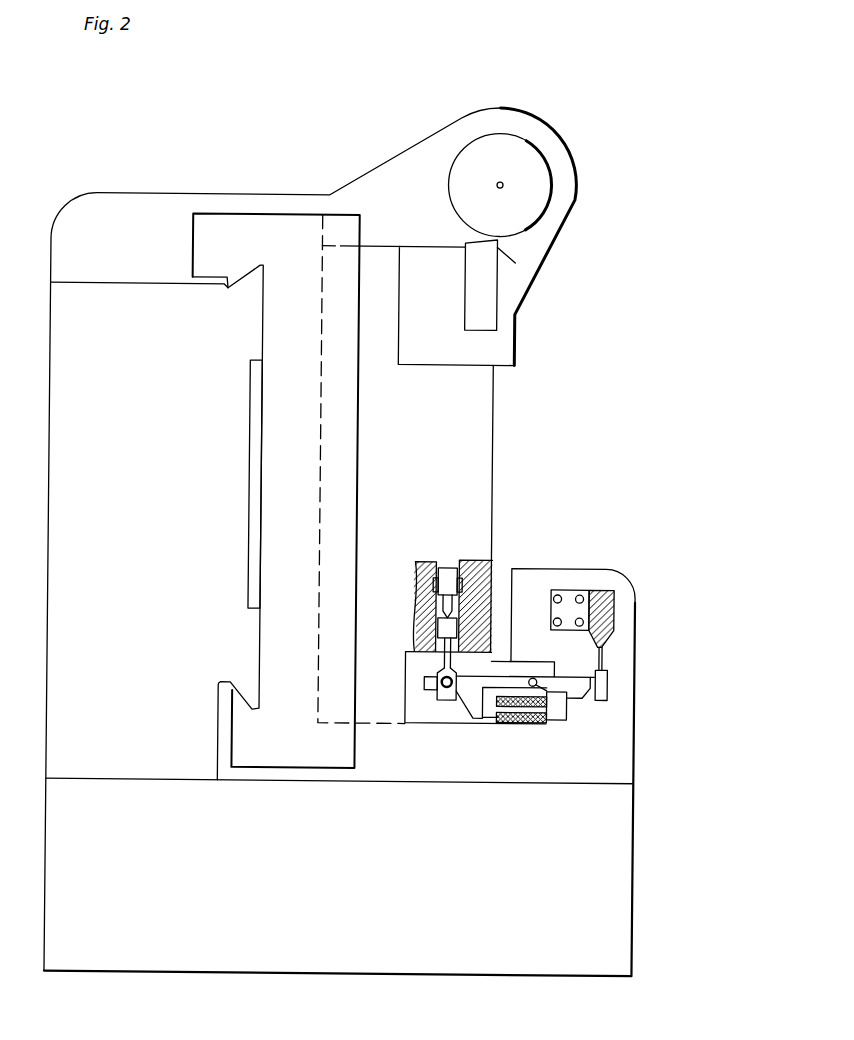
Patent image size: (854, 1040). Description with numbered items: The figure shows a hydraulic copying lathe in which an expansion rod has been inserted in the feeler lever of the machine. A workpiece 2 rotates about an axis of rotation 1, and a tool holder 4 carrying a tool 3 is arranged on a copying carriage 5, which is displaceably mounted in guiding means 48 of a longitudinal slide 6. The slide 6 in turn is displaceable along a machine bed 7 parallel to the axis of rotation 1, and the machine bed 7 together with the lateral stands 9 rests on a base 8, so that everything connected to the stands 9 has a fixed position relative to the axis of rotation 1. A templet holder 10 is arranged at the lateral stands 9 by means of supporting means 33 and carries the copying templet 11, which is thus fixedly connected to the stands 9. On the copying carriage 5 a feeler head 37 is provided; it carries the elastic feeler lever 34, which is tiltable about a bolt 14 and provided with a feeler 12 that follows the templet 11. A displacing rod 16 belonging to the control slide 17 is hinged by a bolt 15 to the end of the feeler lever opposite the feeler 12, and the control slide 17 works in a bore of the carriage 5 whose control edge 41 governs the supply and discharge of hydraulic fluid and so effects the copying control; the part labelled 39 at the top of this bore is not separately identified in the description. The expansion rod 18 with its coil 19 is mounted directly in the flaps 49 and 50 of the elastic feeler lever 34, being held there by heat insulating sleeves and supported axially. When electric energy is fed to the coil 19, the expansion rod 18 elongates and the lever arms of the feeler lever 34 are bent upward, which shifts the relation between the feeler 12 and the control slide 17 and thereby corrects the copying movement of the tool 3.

The axis of rotation 1 is at (500, 181).
The workpiece 2 is at (529, 191).
The tool 3 is at (481, 297).
The tool holder 4 is at (429, 330).
The copying carriage 5 is at (427, 438).
The longitudinal slide 6 is at (298, 442).
The machine bed 7 is at (148, 444).
The base 8 is at (271, 838).
The lateral stand 9 is at (624, 627).
The templet holder 10 is at (606, 601).
The copying templet 11 is at (608, 658).
The feeler 12 is at (612, 682).
The bolt 14 is at (581, 715).
The bolt 15 is at (447, 677).
The displacing rod 16 is at (441, 622).
The control slide 17 is at (441, 615).
The expansion rod 18 is at (533, 723).
The coil 19 is at (560, 720).
The supporting means 33 is at (566, 601).
The elastic feeler lever 34 is at (484, 699).
The feeler head 37 is at (417, 714).
The cylinder 39 is at (448, 564).
The control edge 41 is at (463, 582).
The guiding means 48 is at (321, 372).
The flap 49 is at (472, 705).
The flap 50 is at (582, 719).